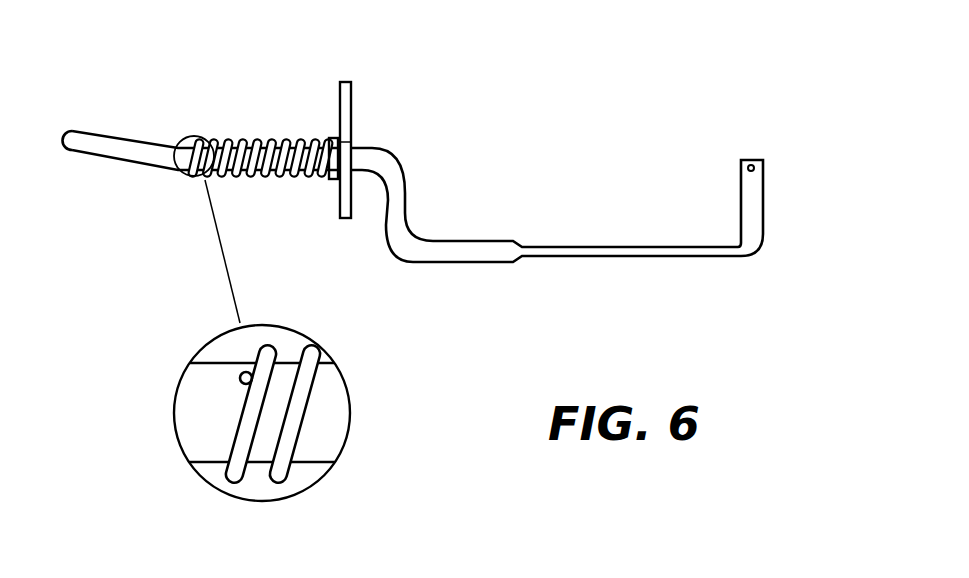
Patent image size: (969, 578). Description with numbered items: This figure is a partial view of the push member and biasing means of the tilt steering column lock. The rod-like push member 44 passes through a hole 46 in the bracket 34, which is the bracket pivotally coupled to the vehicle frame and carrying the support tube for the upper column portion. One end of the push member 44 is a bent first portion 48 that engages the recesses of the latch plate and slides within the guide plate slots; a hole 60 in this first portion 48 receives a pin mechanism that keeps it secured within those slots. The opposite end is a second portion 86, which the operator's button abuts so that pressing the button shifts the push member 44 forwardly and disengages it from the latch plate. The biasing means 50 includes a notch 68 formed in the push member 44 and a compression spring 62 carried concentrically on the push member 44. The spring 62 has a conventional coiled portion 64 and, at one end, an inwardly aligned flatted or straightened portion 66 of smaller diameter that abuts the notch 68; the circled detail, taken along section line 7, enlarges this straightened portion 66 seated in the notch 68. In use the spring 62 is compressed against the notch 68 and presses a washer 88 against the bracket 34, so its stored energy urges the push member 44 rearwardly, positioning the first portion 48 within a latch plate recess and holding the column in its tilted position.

The bracket 34 is at (347, 99).
The push member 44 is at (567, 248).
The hole 46 is at (345, 140).
The bent first portion 48 is at (754, 196).
The biasing means 50 is at (260, 138).
The hole 60 is at (751, 162).
The compression spring 62 is at (243, 178).
The coiled portion 64 is at (260, 197).
The straightened portion 66 is at (240, 379).
The notch 68 is at (256, 367).
The section line 7- 7 is at (187, 208).
The second portion 86 is at (68, 132).
The washer 88 is at (338, 140).